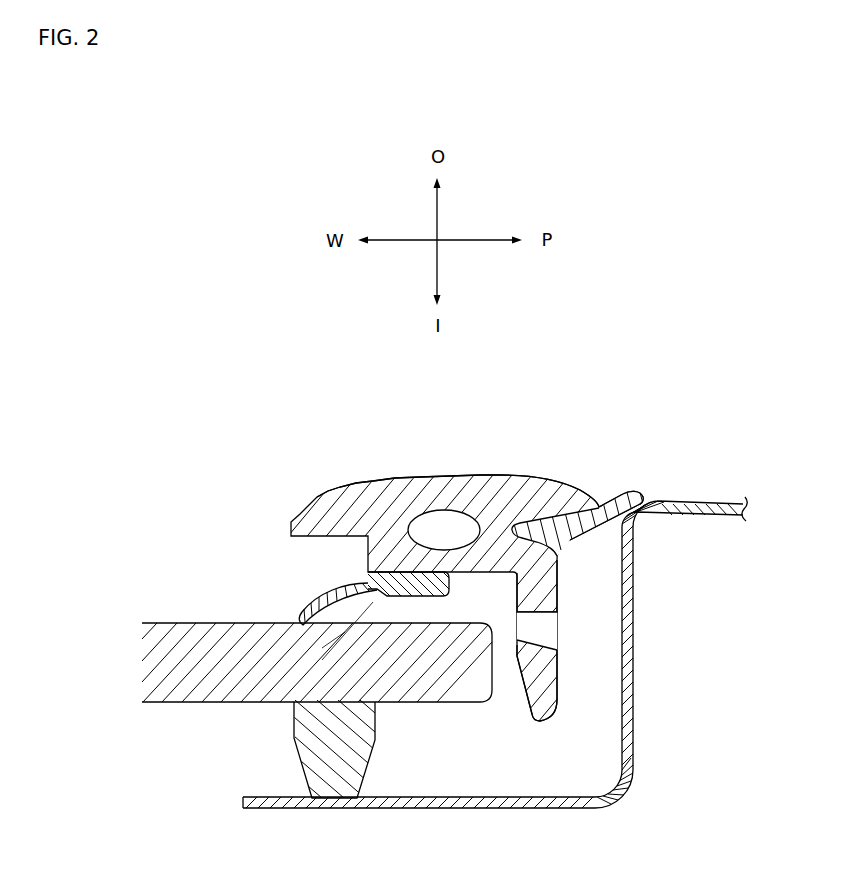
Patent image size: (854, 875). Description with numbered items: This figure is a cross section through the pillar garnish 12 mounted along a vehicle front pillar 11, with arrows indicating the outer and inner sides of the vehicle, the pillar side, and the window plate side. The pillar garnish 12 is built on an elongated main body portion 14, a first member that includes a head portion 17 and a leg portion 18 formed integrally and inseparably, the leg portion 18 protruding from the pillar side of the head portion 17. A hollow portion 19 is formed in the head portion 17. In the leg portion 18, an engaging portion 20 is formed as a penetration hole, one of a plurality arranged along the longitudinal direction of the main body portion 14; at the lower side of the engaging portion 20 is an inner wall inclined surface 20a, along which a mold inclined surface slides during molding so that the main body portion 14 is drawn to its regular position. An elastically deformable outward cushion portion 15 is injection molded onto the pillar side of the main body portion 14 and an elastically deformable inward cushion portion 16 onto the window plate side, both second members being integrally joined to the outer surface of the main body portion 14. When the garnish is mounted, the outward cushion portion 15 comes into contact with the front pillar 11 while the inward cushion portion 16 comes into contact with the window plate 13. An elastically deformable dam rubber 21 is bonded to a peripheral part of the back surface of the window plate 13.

The front pillar 11 is at (692, 501).
The pillar garnish 12 is at (453, 556).
The window plate 13 is at (207, 623).
The main body portion 14 is at (527, 478).
The outward cushion portion 15 is at (620, 493).
The inward cushion portion 16 is at (318, 597).
The head portion 17 is at (470, 477).
The leg portion 18 is at (557, 678).
The hollow portion 19 is at (443, 522).
The engaging portion 20 is at (540, 613).
The inner wall inclined surface 20a is at (533, 641).
The dam rubber 21 is at (375, 742).